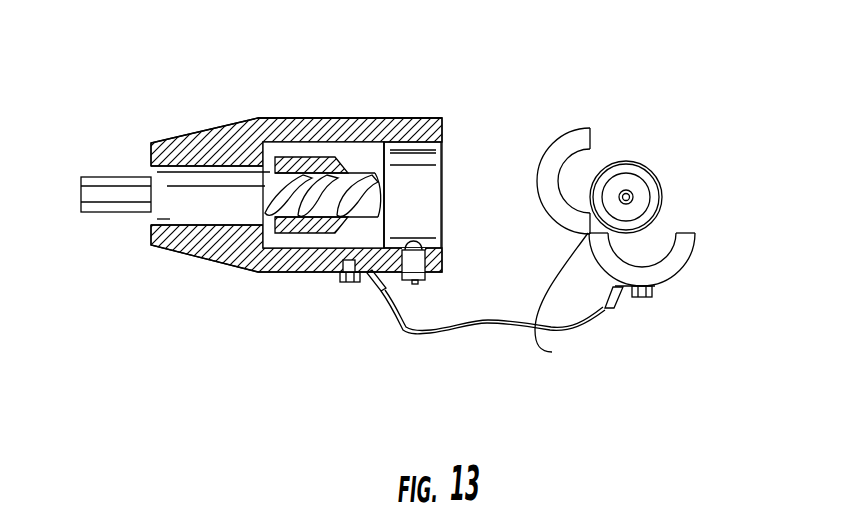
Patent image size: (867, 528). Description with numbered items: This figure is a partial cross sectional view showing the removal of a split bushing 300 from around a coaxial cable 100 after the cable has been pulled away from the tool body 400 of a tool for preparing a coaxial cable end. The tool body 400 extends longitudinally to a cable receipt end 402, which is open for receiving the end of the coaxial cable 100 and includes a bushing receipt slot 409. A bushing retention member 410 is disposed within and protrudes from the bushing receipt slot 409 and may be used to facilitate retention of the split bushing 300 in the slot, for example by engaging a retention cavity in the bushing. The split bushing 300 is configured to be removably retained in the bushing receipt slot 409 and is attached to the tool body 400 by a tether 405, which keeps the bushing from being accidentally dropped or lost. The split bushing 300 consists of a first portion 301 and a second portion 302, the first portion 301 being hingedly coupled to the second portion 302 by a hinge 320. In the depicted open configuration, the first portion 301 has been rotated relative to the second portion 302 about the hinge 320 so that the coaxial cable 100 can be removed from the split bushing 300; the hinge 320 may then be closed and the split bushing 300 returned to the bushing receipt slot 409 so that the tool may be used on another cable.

The coaxial cable 100 is at (657, 176).
The split bushing 300 is at (619, 190).
The first portion 301 is at (562, 217).
The second portion 302 is at (670, 266).
The hinge 320 is at (561, 300).
The tool body 400 is at (223, 131).
The cable receipt end 402 is at (413, 124).
The tether 405 is at (403, 332).
The bushing receipt slot 409 is at (428, 195).
The bushing retention member 410 is at (417, 284).